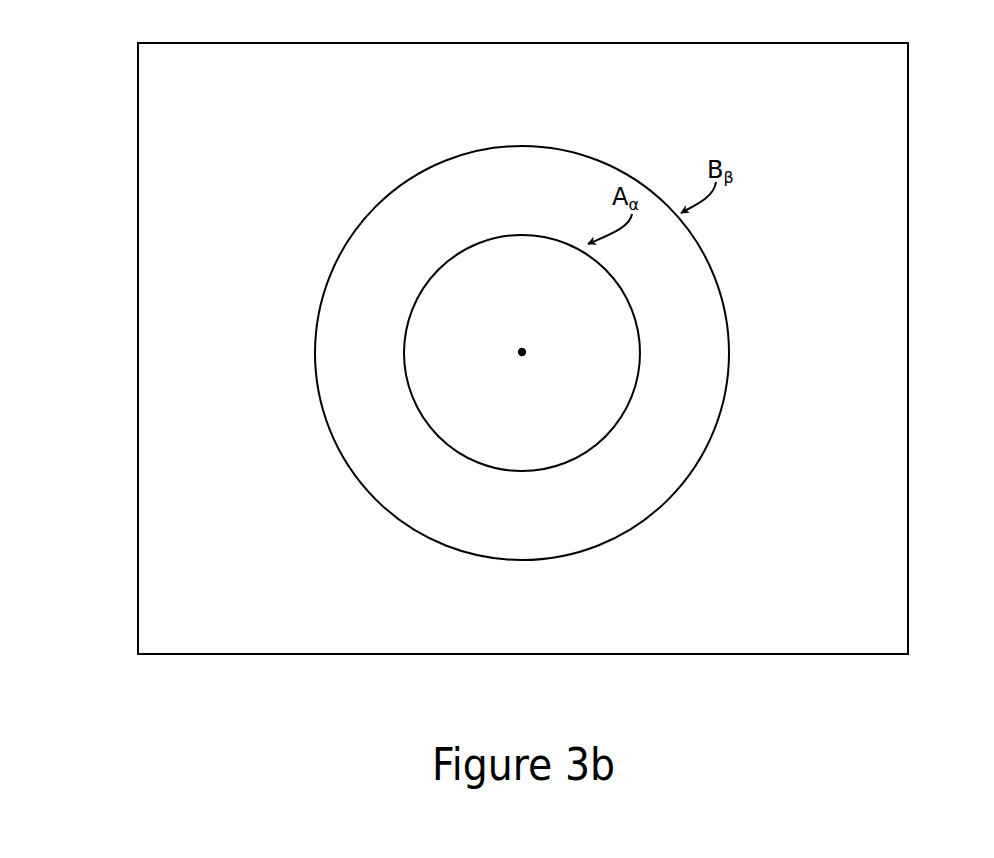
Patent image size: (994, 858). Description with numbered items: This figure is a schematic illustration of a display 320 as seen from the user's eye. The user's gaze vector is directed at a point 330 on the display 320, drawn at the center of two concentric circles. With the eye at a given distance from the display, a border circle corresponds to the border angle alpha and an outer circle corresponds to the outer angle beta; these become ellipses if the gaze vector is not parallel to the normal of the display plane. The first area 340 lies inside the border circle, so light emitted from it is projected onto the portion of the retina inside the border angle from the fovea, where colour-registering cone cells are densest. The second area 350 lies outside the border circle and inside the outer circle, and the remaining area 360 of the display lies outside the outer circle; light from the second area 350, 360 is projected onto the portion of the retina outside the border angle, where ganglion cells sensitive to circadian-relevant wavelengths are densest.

The display 320 is at (135, 84).
The point 330 is at (514, 349).
The first area 340 is at (522, 353).
The second area 350 is at (522, 353).
The second area 360 is at (250, 168).